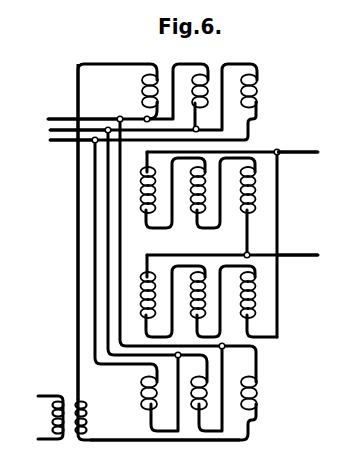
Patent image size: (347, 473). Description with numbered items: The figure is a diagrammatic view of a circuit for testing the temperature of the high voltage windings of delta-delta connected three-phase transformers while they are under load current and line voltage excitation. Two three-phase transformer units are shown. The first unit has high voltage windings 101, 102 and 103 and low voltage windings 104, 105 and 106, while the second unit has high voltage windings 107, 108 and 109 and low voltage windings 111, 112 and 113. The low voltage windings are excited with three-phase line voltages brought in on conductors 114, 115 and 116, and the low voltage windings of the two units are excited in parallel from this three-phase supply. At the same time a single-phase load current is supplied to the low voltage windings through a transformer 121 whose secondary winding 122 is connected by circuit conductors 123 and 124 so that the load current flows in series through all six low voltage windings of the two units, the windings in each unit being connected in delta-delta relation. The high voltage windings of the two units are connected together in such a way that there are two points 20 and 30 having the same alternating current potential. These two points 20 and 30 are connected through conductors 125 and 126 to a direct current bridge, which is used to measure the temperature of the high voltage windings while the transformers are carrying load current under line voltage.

The point 20 is at (277, 149).
The point 30 is at (249, 254).
The high voltage winding 101 is at (147, 213).
The high voltage winding 102 is at (196, 213).
The high voltage winding 103 is at (245, 213).
The low voltage winding 104 is at (143, 96).
The low voltage winding 105 is at (213, 58).
The low voltage winding 106 is at (256, 82).
The high voltage winding 107 is at (146, 306).
The high voltage winding 108 is at (197, 307).
The high voltage winding 109 is at (247, 307).
The low voltage winding 111 is at (140, 382).
The low voltage winding 112 is at (206, 378).
The low voltage winding 113 is at (258, 378).
The conductor 114 is at (62, 117).
The conductor 115 is at (71, 131).
The conductor 116 is at (52, 143).
The transformer 121 is at (57, 416).
The secondary winding 122 is at (85, 417).
The circuit conductor 123 is at (77, 336).
The circuit conductor 124 is at (125, 442).
The conductor 125 is at (289, 156).
The conductor 126 is at (288, 241).